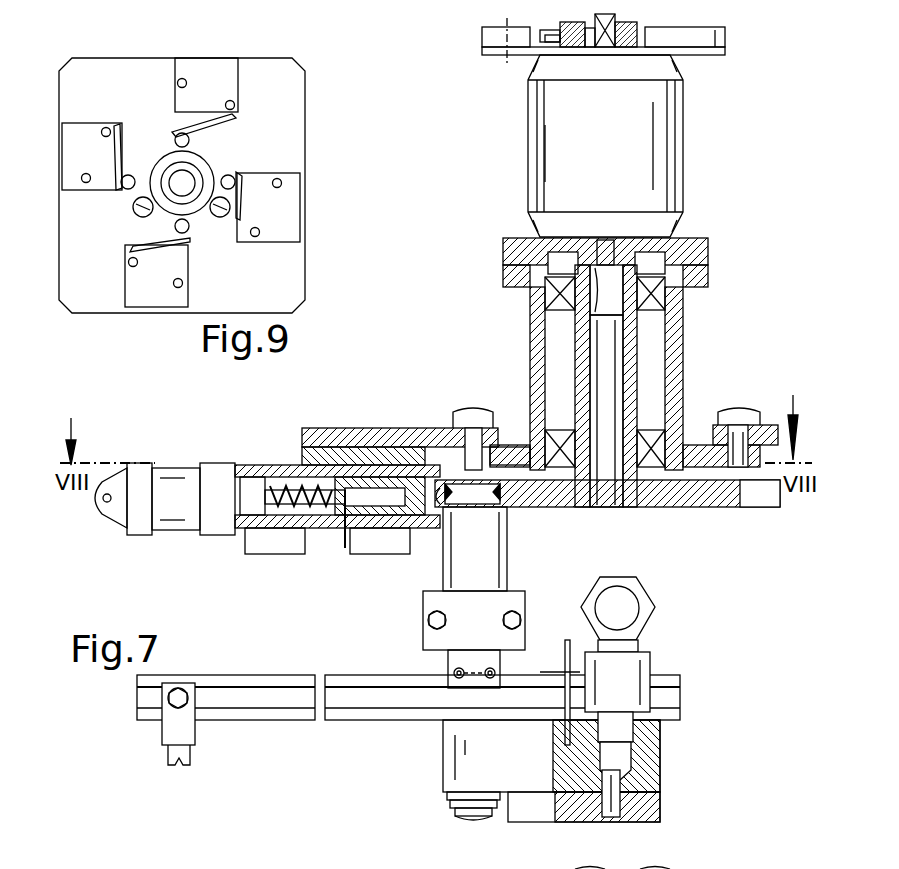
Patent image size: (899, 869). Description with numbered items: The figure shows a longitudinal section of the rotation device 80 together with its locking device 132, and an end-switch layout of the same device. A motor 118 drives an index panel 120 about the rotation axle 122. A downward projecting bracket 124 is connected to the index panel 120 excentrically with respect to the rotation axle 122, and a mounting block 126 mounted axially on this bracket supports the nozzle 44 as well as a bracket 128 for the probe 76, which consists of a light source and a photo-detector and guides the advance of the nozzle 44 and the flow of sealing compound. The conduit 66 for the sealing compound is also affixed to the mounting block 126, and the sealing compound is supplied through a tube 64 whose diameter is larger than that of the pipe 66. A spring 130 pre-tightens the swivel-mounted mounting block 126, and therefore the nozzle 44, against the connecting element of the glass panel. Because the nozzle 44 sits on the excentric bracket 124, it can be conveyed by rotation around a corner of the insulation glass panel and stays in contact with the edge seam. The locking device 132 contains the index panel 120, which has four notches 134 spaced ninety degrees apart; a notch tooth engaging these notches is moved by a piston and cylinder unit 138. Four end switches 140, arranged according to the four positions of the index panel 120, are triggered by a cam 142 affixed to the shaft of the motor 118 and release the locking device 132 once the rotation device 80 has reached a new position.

In FIG. 9, the end switches 140 is at (72, 162).
In FIG. 7, the end switches 140 is at (492, 41).
In FIG. 9, the cam 142 is at (136, 193).
In FIG. 7, the cam 142 is at (568, 50).
In FIG. 7, the motor 118 is at (540, 150).
In FIG. 7, the rotation axle 122 is at (607, 360).
In FIG. 7, the index panel 120 is at (682, 500).
In FIG. 7, the rotation device 80 is at (485, 398).
In FIG. 7, the locking device 132 is at (298, 566).
In FIG. 7, the piston and cylinder unit 138 is at (168, 478).
In FIG. 7, the bracket 124 is at (445, 570).
In FIG. 7, the bracket 128 is at (277, 708).
In FIG. 7, the probe 76 is at (178, 757).
In FIG. 7, the spring 130 is at (546, 668).
In FIG. 7, the mounting block 126 is at (660, 748).
In FIG. 7, the nozzle 44 is at (522, 812).
In FIG. 7, the conduit 66 is at (630, 603).
In FIG. 7, the tube 64 is at (608, 802).
In FIG. 7, the notches 134 is at (618, 866).